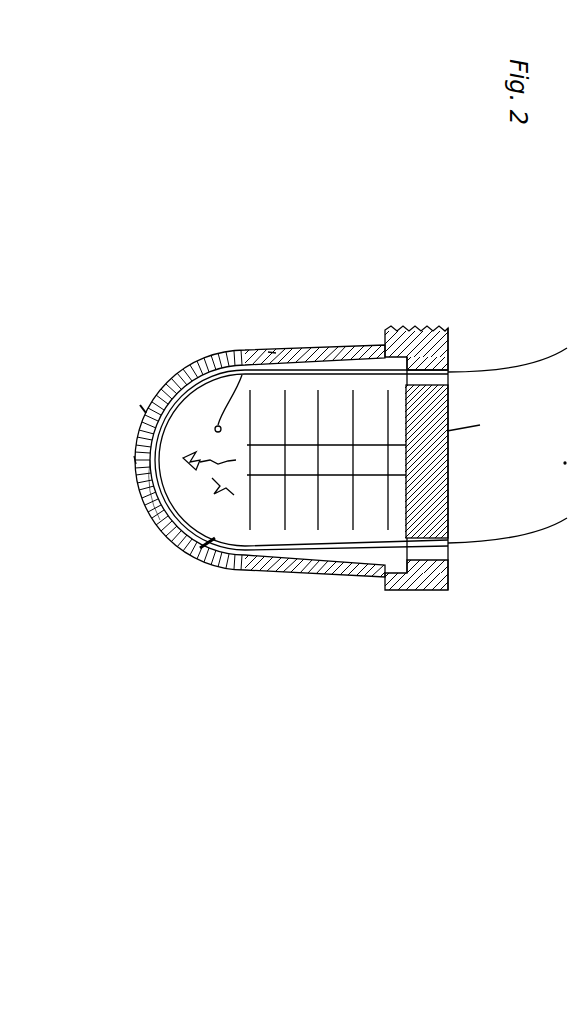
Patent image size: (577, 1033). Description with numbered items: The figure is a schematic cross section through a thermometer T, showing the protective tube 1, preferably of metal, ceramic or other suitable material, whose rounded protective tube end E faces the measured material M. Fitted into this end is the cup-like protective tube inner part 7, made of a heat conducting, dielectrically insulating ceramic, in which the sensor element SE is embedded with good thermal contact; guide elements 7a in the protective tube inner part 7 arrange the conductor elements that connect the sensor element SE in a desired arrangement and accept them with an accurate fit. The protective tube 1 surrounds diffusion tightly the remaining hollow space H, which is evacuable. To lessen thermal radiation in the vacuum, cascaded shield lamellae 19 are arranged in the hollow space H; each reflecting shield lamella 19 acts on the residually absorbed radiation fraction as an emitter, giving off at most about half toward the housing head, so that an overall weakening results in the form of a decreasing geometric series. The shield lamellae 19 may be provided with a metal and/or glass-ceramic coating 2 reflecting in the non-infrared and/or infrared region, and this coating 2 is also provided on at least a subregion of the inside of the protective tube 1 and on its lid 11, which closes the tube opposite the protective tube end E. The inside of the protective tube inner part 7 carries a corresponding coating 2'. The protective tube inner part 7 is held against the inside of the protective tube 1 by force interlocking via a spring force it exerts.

The protective tube 1 is at (280, 573).
The metal coating 2 is at (270, 475).
The coating 2' is at (126, 513).
The protective tube inner part 7 is at (210, 540).
The guide elements 7a is at (146, 410).
The lid 11 is at (448, 482).
The shield lamellae 19 is at (282, 413).
The hollow space H is at (272, 352).
The sensor element SE is at (133, 460).
The protective tube end E is at (90, 510).
The thermometer T is at (428, 655).
The measured material M is at (490, 405).